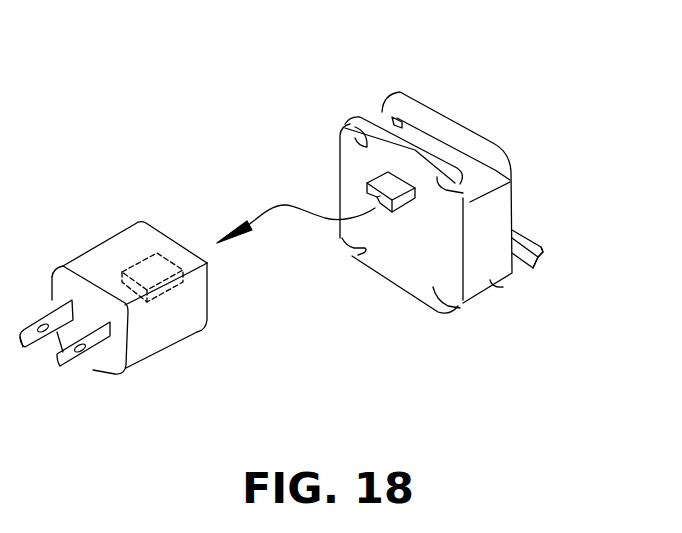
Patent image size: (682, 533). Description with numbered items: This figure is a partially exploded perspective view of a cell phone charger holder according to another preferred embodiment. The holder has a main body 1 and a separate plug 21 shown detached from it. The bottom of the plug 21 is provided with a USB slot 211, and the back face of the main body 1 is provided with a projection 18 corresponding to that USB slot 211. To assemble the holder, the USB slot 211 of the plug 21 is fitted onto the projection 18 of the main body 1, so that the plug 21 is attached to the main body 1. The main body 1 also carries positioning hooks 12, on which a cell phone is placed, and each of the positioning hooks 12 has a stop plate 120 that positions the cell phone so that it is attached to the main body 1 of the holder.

The main body 1 is at (323, 118).
The positioning hooks 12 is at (520, 277).
The stop plate 120 is at (532, 245).
The projection 18 is at (366, 177).
The plug 21 is at (102, 360).
The USB slot 211 is at (170, 258).